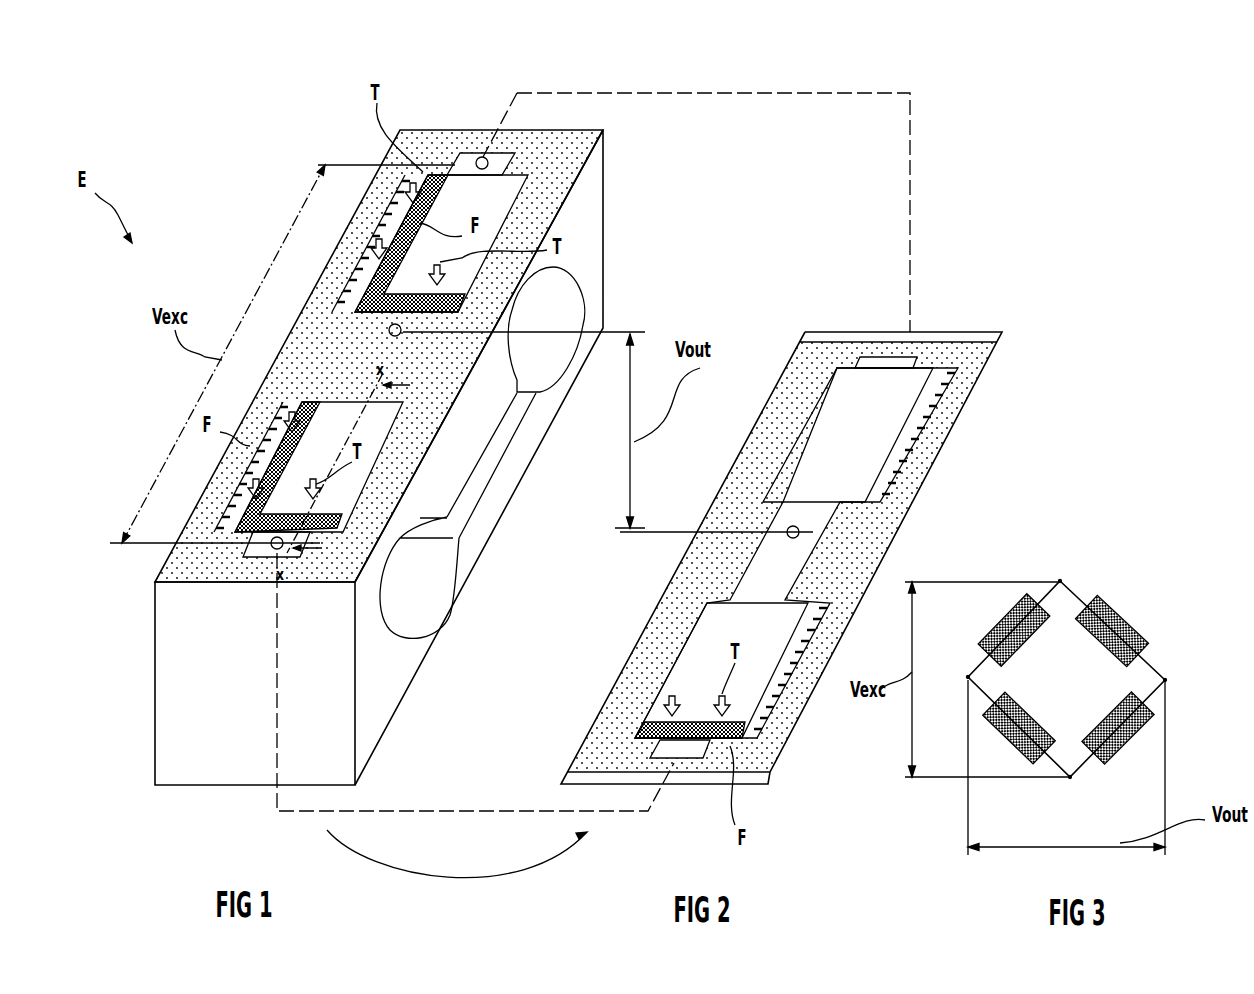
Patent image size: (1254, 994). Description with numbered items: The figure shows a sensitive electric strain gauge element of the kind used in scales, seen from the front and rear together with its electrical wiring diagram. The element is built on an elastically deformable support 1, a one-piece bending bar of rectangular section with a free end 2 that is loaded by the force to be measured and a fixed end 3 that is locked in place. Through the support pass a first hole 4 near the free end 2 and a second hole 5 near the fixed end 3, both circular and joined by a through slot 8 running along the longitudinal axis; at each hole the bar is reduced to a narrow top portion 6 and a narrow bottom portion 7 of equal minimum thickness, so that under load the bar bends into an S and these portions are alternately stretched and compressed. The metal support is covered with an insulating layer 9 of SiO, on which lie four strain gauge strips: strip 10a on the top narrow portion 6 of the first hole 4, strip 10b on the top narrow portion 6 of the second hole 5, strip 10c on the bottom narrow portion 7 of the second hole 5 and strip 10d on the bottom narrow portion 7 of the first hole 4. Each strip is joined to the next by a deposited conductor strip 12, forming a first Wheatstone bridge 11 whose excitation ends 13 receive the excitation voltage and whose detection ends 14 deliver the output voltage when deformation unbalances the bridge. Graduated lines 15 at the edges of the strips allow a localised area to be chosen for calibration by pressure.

In FIG. 1, the elastically deformable support 1 is at (153, 706).
In FIG. 1, the free end 2 is at (228, 748).
In FIG. 1, the fixed end 3 is at (605, 193).
In FIG. 1, the first through hole 4 is at (430, 620).
In FIG. 1, the second through hole 5 is at (541, 373).
In FIG. 1, the narrow top portion 6 is at (523, 288).
In FIG. 1, the narrow bottom portion 7 is at (572, 372).
In FIG. 1, the through slot 8 is at (493, 458).
In FIG. 1, the insulating layer 9 is at (578, 142).
In FIG. 2, the insulating layer 9 is at (782, 407).
In FIG. 1, the strain gauge strip 10a is at (372, 432).
In FIG. 3, the strain gauge strip 10a is at (1018, 745).
In FIG. 1, the strain gauge strip 10b is at (492, 207).
In FIG. 3, the strain gauge strip 10b is at (998, 623).
In FIG. 2, the strain gauge strip 10c is at (848, 392).
In FIG. 3, the strain gauge strip 10c is at (1140, 632).
In FIG. 2, the strain gauge strip 10d is at (703, 680).
In FIG. 3, the strain gauge strip 10d is at (1130, 745).
In FIG. 3, the first Wheatstone bridge 11 is at (1143, 596).
In FIG. 1, the conductor strip 12 is at (302, 362).
In FIG. 2, the conductor strip 12 is at (788, 563).
In FIG. 1, the excitation end 13 is at (481, 156).
In FIG. 3, the excitation end 13 is at (1062, 582).
In FIG. 1, the detection end 14 is at (388, 333).
In FIG. 2, the detection end 14 is at (800, 527).
In FIG. 3, the detection end 14 is at (968, 679).
In FIG. 1, the graduated lines 15 is at (358, 256).
In FIG. 2, the graduated lines 15 is at (950, 420).